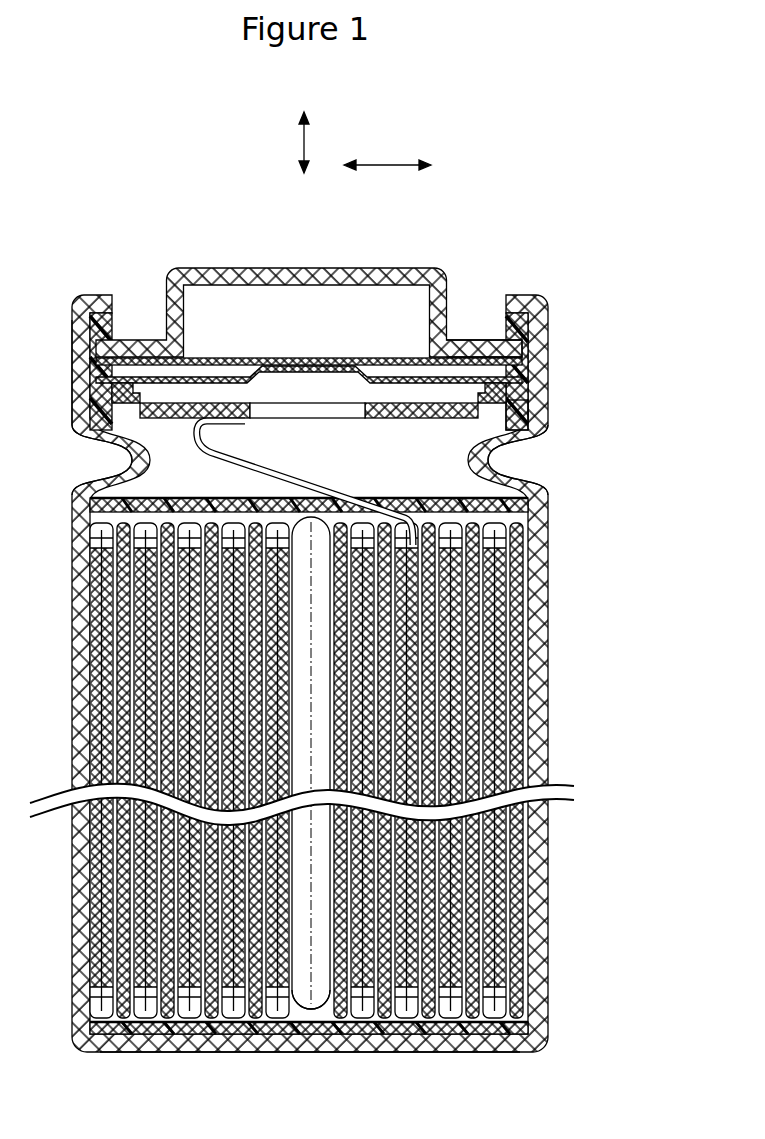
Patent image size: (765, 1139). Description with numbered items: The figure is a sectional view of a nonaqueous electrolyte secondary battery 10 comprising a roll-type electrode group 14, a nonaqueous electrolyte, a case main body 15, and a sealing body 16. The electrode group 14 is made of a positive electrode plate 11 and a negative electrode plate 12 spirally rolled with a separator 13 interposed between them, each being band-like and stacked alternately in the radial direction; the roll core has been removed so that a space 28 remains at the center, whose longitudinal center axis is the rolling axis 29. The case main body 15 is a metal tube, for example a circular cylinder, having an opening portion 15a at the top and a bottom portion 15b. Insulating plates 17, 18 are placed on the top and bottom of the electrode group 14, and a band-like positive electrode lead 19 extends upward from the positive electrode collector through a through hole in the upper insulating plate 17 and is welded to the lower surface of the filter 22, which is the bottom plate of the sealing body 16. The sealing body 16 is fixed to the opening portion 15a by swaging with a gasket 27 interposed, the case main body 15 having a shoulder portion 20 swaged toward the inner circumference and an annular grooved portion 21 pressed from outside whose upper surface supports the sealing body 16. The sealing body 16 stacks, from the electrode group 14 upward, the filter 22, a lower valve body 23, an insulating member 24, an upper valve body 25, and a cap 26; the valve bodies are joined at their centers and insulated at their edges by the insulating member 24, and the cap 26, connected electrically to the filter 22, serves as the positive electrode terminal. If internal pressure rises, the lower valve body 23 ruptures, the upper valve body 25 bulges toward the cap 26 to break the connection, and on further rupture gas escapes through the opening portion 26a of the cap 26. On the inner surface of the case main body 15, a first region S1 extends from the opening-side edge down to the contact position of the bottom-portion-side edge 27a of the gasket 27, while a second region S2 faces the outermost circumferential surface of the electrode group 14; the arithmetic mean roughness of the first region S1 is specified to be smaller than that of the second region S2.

The nonaqueous electrolyte secondary battery 10 is at (508, 209).
The positive electrode plate 11 is at (520, 735).
The negative electrode plate 12 is at (523, 766).
The separator 13 is at (523, 845).
The electrode group 14 is at (380, 806).
The case main body 15 is at (329, 663).
The opening portion 15a is at (110, 298).
The bottom portion 15b is at (462, 1040).
The sealing body 16 is at (309, 272).
The upper insulating plate 17 is at (523, 470).
The lower insulating plate 18 is at (540, 1012).
The positive electrode lead 19 is at (125, 456).
The shoulder portion 20 is at (311, 326).
The grooved portion 21 is at (480, 462).
The filter 22 is at (402, 418).
The lower valve body 23 is at (217, 377).
The insulating member 24 is at (134, 358).
The upper valve body 25 is at (372, 358).
The cap 26 is at (309, 280).
The opening portion of the cap 26a is at (442, 312).
The gasket 27 is at (356, 349).
The bottom-portion-side edge of the gasket 27a is at (530, 448).
The space 28 is at (300, 998).
The rolling axis 29 is at (318, 1012).
The first region S1 is at (547, 414).
The second region S2 is at (536, 613).